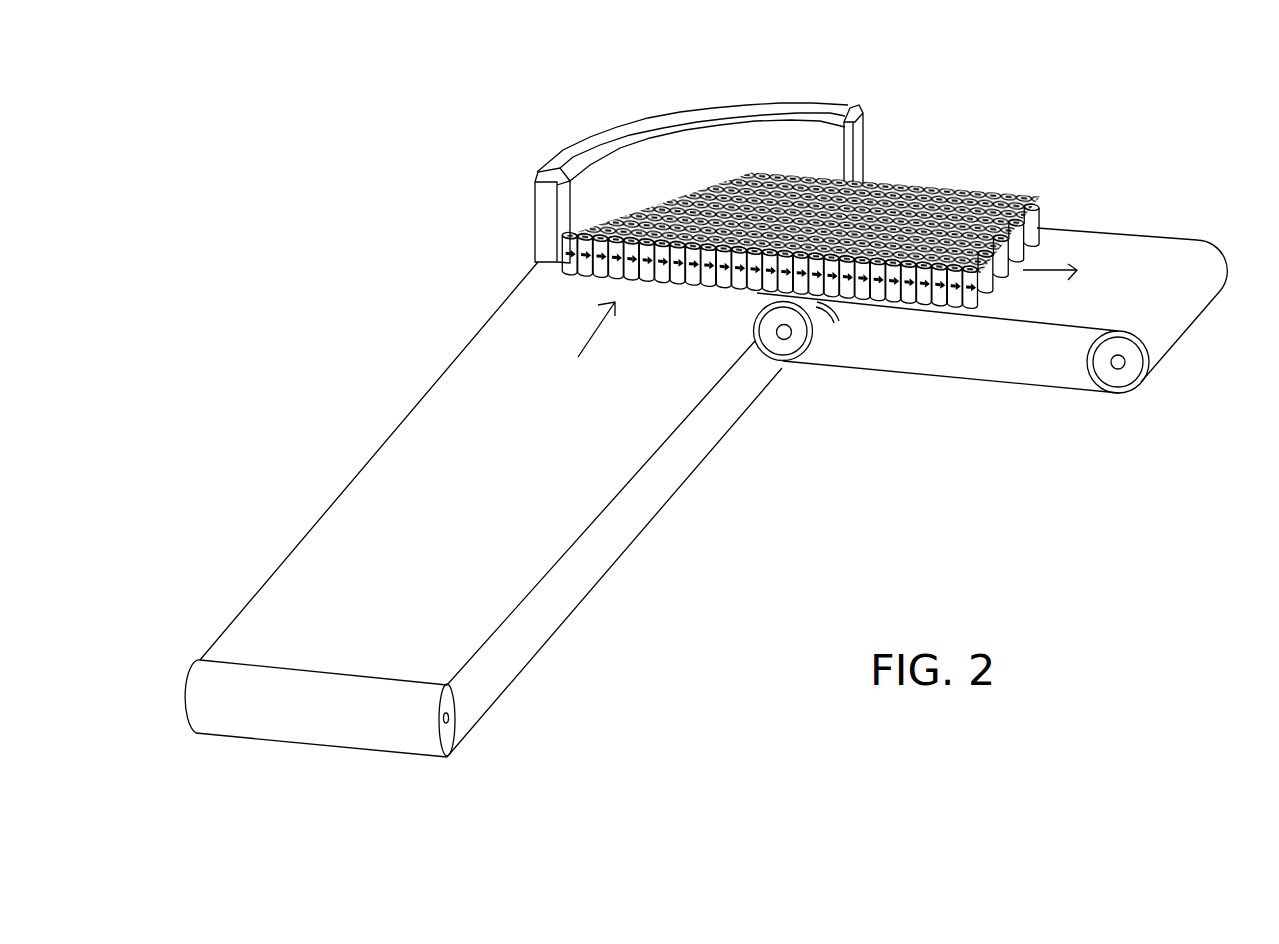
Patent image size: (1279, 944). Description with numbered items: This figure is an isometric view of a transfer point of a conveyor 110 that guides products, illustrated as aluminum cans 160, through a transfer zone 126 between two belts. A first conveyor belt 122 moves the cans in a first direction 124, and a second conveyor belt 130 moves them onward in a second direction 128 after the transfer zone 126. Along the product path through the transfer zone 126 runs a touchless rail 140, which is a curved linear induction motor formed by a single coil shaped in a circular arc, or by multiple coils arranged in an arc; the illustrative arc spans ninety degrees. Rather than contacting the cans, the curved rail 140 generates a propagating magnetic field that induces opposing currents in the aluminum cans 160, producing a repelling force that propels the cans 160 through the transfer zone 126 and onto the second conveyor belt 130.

The conveyor 110 is at (512, 152).
The first conveyor belt 122 is at (452, 410).
The first direction 124 is at (597, 347).
The transfer zone 126 is at (784, 368).
The second direction 128 is at (1050, 288).
The second conveyor belt 130 is at (1088, 231).
The touchless rail 140 is at (675, 137).
The aluminum cans 160 is at (913, 178).